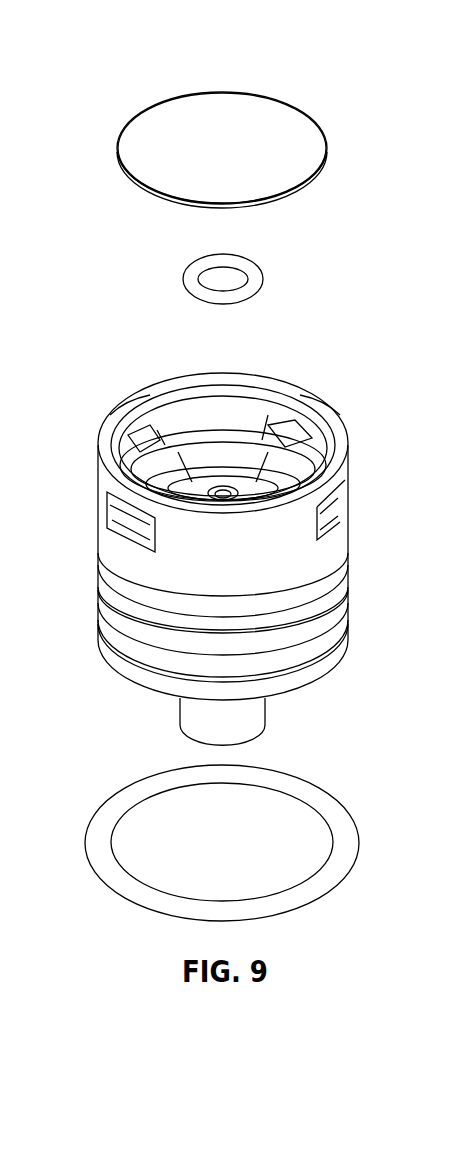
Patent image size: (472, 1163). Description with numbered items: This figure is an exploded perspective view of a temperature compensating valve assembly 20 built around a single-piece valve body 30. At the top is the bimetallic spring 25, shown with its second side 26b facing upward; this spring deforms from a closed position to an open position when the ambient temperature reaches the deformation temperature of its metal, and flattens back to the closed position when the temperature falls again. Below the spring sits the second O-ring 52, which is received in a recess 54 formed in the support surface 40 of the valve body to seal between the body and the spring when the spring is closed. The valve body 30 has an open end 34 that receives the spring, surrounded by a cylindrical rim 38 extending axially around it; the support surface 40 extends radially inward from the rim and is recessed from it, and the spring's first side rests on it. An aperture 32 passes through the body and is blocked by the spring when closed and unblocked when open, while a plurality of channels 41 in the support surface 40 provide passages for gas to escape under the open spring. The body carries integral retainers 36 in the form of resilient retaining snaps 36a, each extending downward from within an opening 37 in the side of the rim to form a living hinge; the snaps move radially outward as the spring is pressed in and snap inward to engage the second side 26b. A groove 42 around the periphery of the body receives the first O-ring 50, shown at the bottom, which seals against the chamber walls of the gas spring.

The temperature compensating valve assembly 20 is at (320, 62).
The bimetallic spring 25 is at (303, 134).
The second side 26b is at (187, 120).
The second O-ring 52 is at (250, 272).
The single-piece valve body 30 is at (339, 645).
The groove 42 is at (313, 582).
The cylindrical rim 38 is at (105, 440).
The support surface 40 is at (100, 460).
The recess 54 is at (316, 445).
The open end 34 is at (200, 392).
The aperture 32 is at (220, 492).
The channels 41 is at (180, 418).
The opening 37 is at (157, 430).
The integral retainers 36 is at (126, 423).
The resilient retaining snaps 36a is at (128, 423).
The first O-ring 50 is at (343, 822).